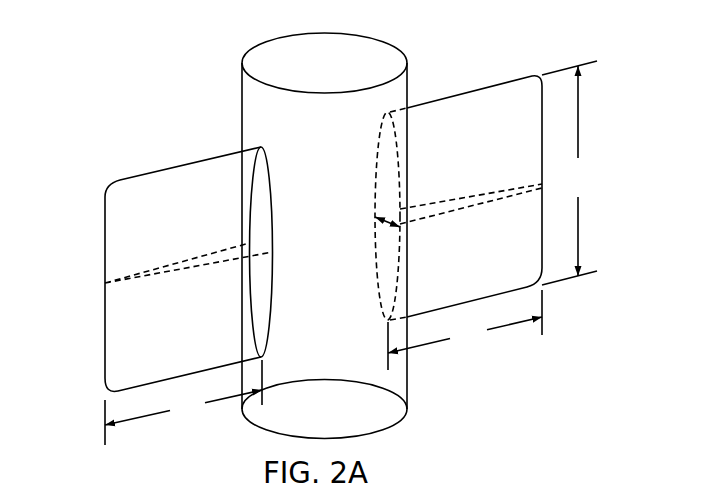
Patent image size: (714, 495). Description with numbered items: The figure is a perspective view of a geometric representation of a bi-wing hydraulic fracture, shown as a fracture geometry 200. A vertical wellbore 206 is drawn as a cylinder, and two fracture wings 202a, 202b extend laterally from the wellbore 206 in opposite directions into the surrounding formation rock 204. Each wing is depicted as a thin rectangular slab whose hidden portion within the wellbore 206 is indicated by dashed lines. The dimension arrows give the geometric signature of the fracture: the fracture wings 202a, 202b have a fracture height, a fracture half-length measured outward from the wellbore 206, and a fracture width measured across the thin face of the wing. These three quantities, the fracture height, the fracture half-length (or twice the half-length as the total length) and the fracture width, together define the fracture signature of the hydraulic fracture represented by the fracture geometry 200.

The fracture geometry 200 is at (457, 40).
The fracture wing 202a is at (119, 163).
The fracture wing 202b is at (536, 57).
The formation rock 204 is at (192, 110).
The wellbore 206 is at (248, 46).